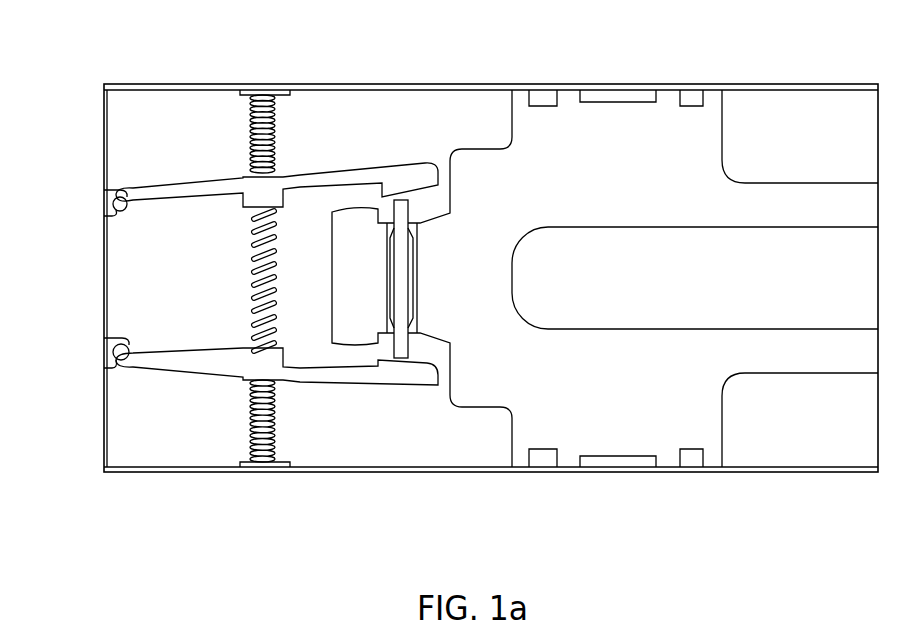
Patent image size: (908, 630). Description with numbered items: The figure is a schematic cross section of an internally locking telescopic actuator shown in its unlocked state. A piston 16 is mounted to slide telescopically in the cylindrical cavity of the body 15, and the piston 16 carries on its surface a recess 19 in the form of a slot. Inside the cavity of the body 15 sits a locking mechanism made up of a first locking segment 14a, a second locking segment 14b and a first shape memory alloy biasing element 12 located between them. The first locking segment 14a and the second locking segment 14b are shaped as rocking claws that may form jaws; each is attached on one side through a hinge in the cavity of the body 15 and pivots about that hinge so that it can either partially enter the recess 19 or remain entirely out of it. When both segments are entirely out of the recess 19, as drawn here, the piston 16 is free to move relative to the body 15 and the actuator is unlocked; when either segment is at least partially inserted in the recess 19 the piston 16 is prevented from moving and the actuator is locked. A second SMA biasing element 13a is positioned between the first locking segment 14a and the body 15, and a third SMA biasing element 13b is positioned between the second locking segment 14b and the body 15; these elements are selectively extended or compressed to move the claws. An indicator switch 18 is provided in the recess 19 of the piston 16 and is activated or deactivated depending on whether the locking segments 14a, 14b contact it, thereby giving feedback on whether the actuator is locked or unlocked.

The first shape memory alloy biasing element 12 is at (252, 242).
The second SMA biasing element 13a is at (250, 143).
The third SMA biasing element 13b is at (250, 428).
The first locking segment 14a is at (388, 165).
The second locking segment 14b is at (340, 388).
The body 15 is at (618, 475).
The piston 16 is at (668, 380).
The indicator switch 18 is at (410, 335).
The recess 19 is at (442, 202).